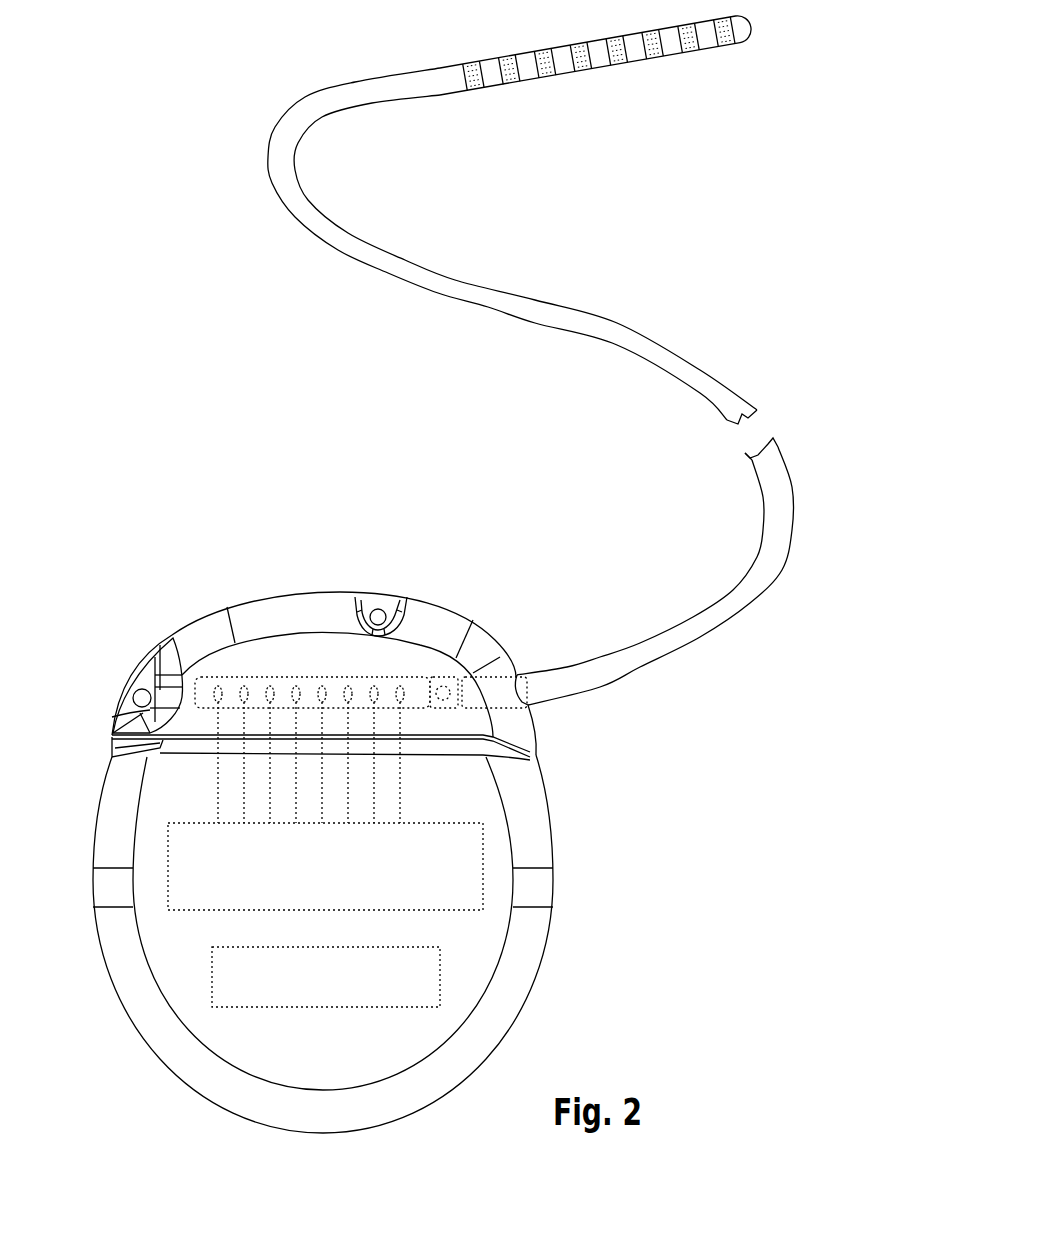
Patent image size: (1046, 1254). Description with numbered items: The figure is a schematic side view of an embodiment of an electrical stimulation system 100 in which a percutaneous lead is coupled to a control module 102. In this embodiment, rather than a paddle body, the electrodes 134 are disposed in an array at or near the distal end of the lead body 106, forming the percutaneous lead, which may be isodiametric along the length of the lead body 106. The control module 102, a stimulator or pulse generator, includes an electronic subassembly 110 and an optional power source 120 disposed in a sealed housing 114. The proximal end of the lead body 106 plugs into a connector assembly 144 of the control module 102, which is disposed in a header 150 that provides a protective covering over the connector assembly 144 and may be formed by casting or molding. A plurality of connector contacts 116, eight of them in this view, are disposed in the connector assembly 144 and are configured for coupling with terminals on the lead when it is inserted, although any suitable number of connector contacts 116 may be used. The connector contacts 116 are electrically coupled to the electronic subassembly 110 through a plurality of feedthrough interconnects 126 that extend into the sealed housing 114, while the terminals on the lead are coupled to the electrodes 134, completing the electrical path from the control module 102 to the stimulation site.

The electrical stimulation system 100 is at (728, 246).
The control module 102 is at (188, 558).
The lead body 106 is at (618, 322).
The electronic subassembly 110 is at (187, 873).
The sealed housing 114 is at (170, 800).
The connector contact 116 is at (273, 688).
The power source 120 is at (230, 983).
The feedthrough interconnect 126 is at (218, 772).
The electrodes 134 is at (731, 51).
The connector assembly 144 is at (413, 677).
The header 150 is at (297, 603).